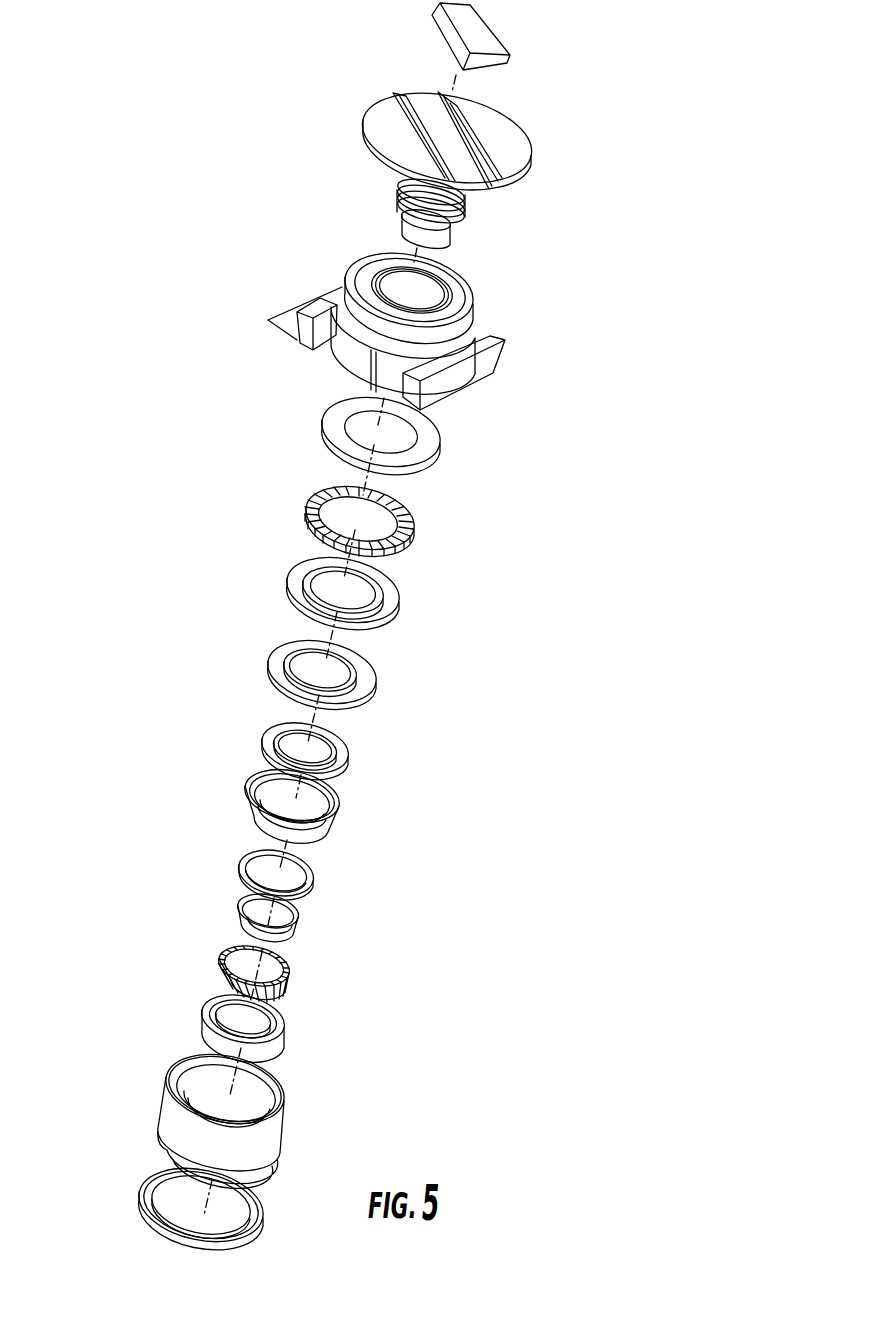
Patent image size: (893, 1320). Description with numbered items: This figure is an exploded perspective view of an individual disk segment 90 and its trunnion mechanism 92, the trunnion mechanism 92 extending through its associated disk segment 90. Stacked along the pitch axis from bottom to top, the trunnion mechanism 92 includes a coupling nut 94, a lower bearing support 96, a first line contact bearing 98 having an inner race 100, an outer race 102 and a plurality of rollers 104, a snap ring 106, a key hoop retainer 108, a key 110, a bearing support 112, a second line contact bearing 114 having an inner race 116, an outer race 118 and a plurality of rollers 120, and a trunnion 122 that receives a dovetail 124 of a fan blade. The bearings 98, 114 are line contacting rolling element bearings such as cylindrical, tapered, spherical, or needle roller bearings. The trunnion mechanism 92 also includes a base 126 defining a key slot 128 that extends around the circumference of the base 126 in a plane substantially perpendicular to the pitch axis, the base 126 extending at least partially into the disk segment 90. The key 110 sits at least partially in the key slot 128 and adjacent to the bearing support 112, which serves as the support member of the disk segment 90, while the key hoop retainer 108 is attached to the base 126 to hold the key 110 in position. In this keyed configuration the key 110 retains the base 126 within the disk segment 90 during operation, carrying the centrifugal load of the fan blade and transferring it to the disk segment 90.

The disk segment 90 is at (505, 339).
The trunnion mechanism 92 is at (147, 279).
The coupling nut 94 is at (156, 1181).
The lower bearing support 96 is at (168, 1094).
The first line contact bearing 98 is at (182, 962).
The inner race 100 is at (240, 912).
The outer race 102 is at (203, 1021).
The rollers 104 is at (220, 975).
The snap ring 106 is at (313, 877).
The key hoop retainer 108 is at (336, 809).
The key 110 is at (343, 750).
The bearing support 112 is at (370, 682).
The second line contact bearing 114 is at (374, 509).
The inner race 116 is at (290, 582).
The outer race 118 is at (323, 428).
The rollers 120 is at (306, 505).
The trunnion 122 is at (527, 152).
The dovetail 124 is at (508, 53).
The base 126 is at (417, 204).
The key slot 128 is at (472, 203).